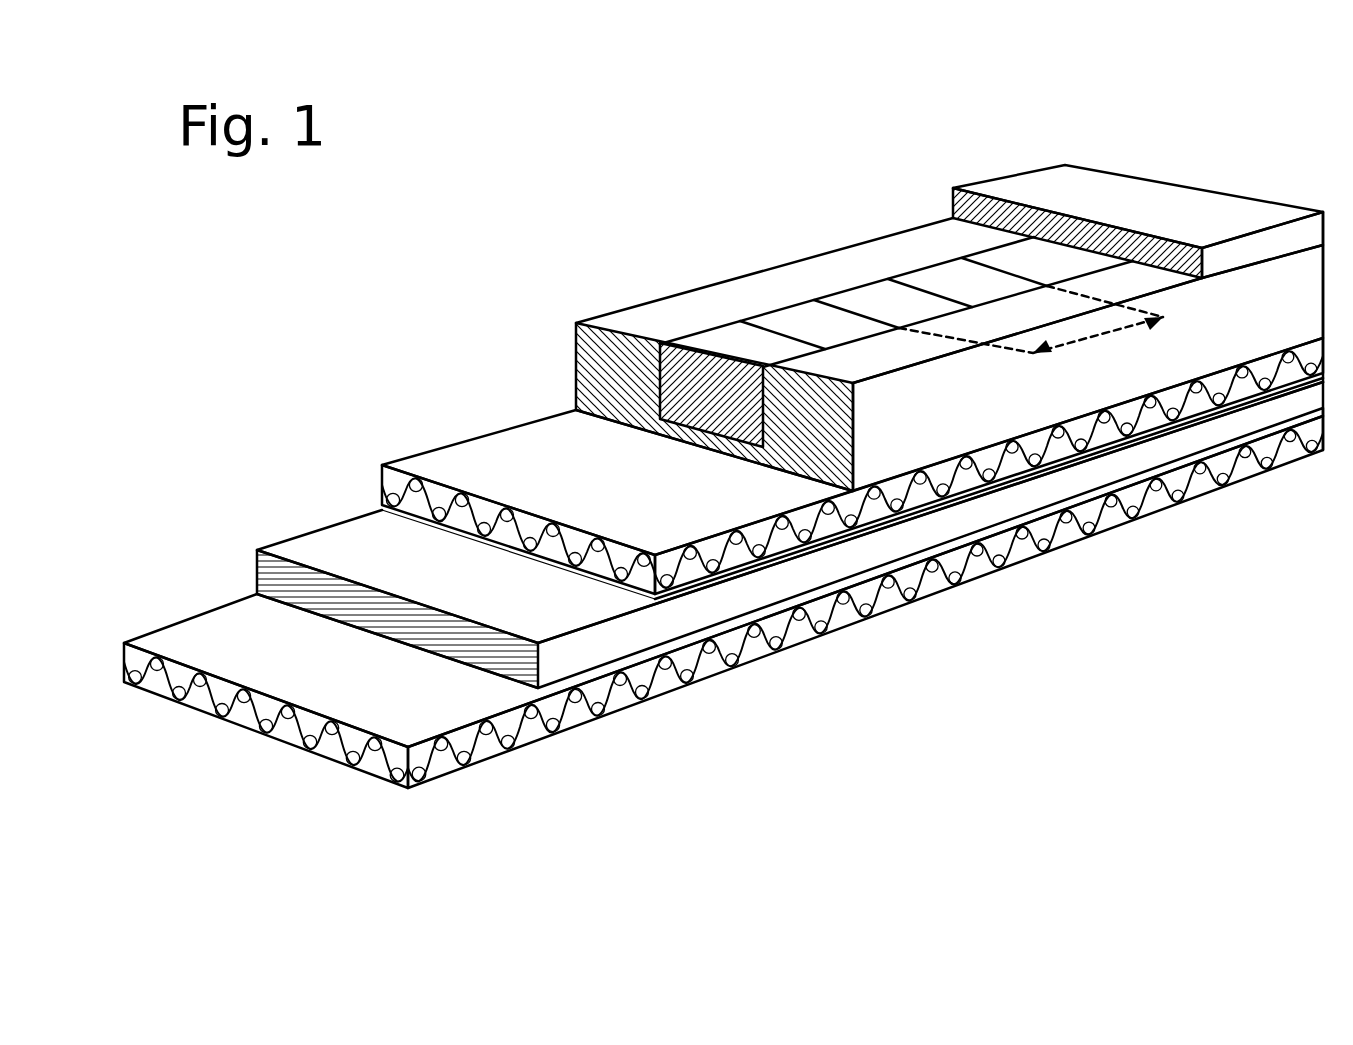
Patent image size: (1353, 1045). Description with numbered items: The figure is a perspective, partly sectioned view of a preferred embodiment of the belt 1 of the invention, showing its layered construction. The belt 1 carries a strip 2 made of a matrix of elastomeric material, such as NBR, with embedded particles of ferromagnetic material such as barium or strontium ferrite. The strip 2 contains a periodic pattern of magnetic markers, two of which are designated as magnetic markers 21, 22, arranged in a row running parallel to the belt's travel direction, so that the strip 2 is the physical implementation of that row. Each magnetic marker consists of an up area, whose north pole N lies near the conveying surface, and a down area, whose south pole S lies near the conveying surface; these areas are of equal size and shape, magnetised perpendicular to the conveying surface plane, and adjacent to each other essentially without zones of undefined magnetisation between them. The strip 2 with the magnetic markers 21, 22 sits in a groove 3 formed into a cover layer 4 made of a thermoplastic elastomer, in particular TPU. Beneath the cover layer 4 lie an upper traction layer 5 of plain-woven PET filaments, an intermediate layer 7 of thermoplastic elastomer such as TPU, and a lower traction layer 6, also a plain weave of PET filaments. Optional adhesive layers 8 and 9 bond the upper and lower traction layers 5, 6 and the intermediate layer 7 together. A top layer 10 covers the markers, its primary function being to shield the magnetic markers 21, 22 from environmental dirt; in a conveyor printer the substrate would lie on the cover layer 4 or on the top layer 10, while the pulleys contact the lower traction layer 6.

The belt 1 is at (523, 353).
The strip 2 is at (660, 423).
The groove 3 is at (688, 432).
The cover layer 4 is at (970, 375).
The upper traction layer 5 is at (485, 463).
The lower traction layer 6 is at (215, 637).
The intermediate layer 7 is at (287, 580).
The adhesive layer 8 is at (640, 657).
The adhesive layer 9 is at (887, 528).
The top layer 10 is at (1070, 195).
The magnetic marker 21 is at (715, 337).
The magnetic marker 22 is at (865, 290).